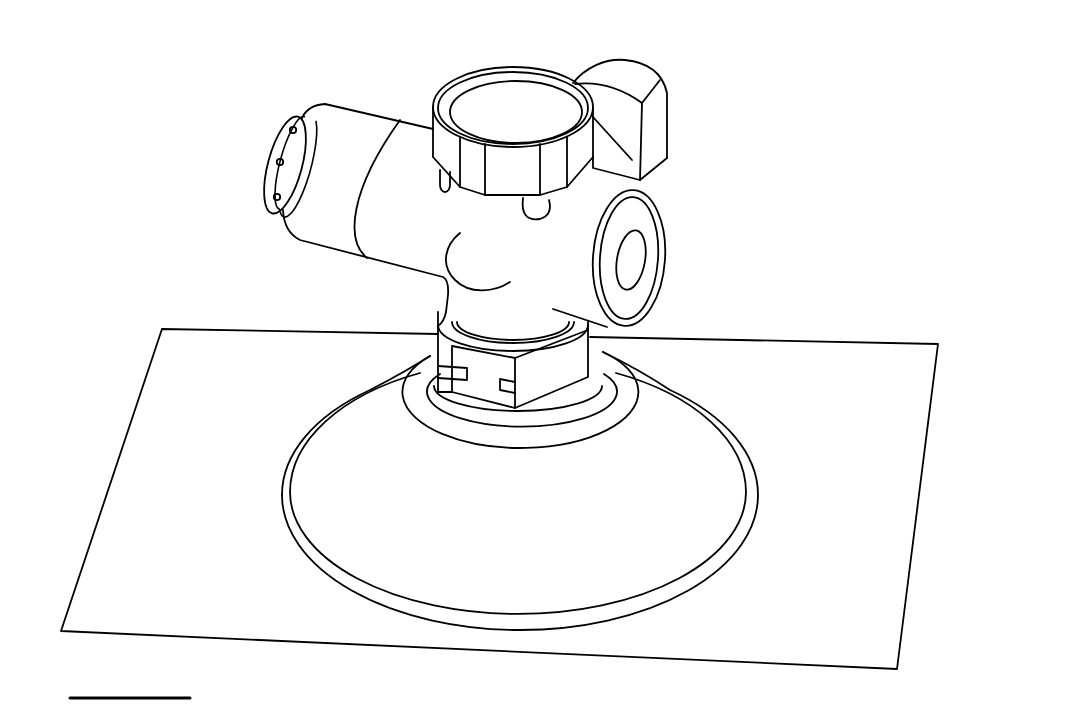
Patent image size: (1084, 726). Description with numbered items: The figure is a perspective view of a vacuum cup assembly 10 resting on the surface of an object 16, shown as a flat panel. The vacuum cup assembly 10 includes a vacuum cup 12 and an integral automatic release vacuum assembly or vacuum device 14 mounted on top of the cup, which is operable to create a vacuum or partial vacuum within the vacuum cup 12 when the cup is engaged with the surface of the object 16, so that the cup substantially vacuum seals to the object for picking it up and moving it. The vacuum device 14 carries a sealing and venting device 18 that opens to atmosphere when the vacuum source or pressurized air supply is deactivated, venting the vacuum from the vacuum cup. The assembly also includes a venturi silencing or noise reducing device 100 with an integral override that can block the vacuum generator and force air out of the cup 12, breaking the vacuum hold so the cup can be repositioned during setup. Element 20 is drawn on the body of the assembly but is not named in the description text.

The vacuum cup assembly 10 is at (292, 288).
The vacuum cup 12 is at (291, 490).
The vacuum device 14 is at (596, 323).
The object 16 is at (822, 357).
The sealing and venting device 18 is at (602, 170).
The valve body 20 is at (425, 247).
The venturi silencing device 100 is at (355, 96).